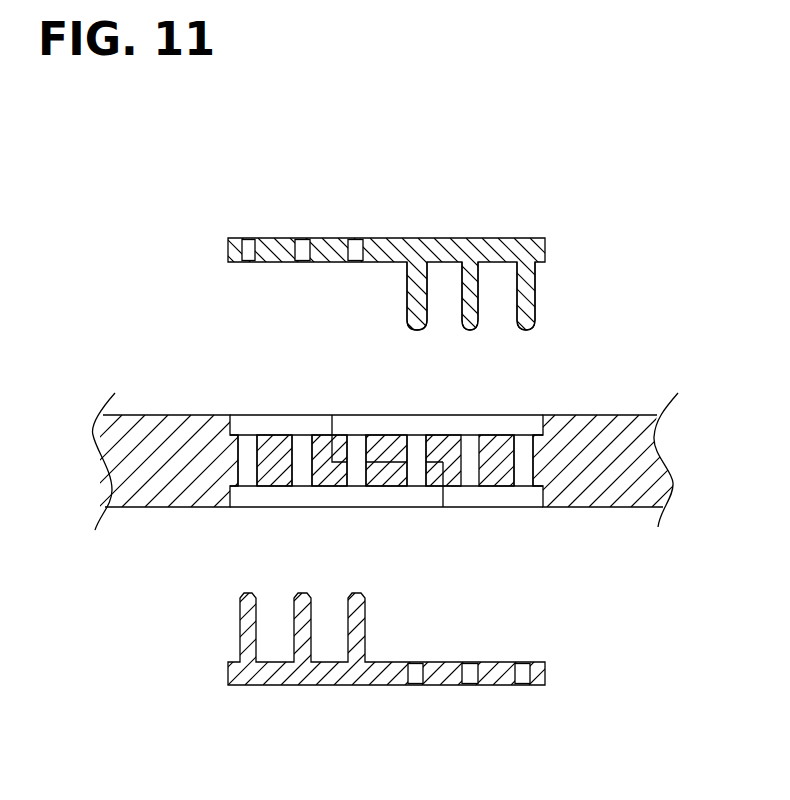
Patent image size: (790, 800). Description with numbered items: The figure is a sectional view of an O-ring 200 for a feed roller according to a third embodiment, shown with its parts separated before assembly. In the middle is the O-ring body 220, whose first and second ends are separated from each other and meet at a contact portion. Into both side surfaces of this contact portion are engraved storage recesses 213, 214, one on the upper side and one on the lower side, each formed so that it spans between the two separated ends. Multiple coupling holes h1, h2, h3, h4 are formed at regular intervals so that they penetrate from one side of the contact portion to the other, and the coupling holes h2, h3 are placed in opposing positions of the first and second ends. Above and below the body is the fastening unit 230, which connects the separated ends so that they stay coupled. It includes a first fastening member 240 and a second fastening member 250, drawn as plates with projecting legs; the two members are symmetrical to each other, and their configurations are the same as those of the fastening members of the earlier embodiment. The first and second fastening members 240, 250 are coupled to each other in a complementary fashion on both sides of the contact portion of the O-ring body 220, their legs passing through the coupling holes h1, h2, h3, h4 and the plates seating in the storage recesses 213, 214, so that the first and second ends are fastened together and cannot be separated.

The O-ring 200 is at (386, 444).
The storage recess 213 is at (443, 415).
The storage recess 214 is at (427, 497).
The O-ring body 220 is at (622, 418).
The fastening unit 230 is at (424, 236).
The first fastening member 240 is at (441, 236).
The second fastening member 250 is at (502, 648).
The coupling hole h1 is at (548, 450).
The coupling hole h2 is at (413, 487).
The coupling hole h3 is at (360, 487).
The coupling hole h4 is at (250, 487).